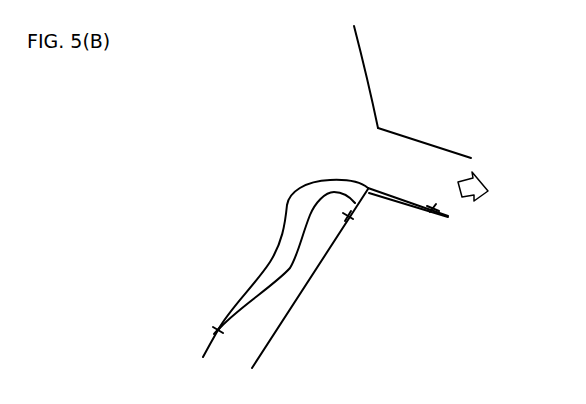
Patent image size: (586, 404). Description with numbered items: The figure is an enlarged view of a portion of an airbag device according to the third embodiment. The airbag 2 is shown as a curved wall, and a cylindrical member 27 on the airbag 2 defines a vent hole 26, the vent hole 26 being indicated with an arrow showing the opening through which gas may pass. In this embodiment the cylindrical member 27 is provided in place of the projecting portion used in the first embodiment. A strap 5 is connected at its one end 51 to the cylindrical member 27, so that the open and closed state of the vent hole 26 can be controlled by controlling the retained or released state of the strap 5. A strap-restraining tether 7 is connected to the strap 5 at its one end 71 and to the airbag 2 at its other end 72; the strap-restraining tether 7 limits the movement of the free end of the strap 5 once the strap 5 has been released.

The airbag 2 is at (362, 41).
The cylindrical member 27 is at (438, 147).
The vent hole 26 is at (474, 169).
The strap 5 is at (285, 203).
The strap-restraining tether 7 is at (289, 265).
The one end of strap-restraining tether 71 is at (226, 335).
The other end of strap-restraining tether 72 is at (360, 221).
The one end of strap 51 is at (437, 203).